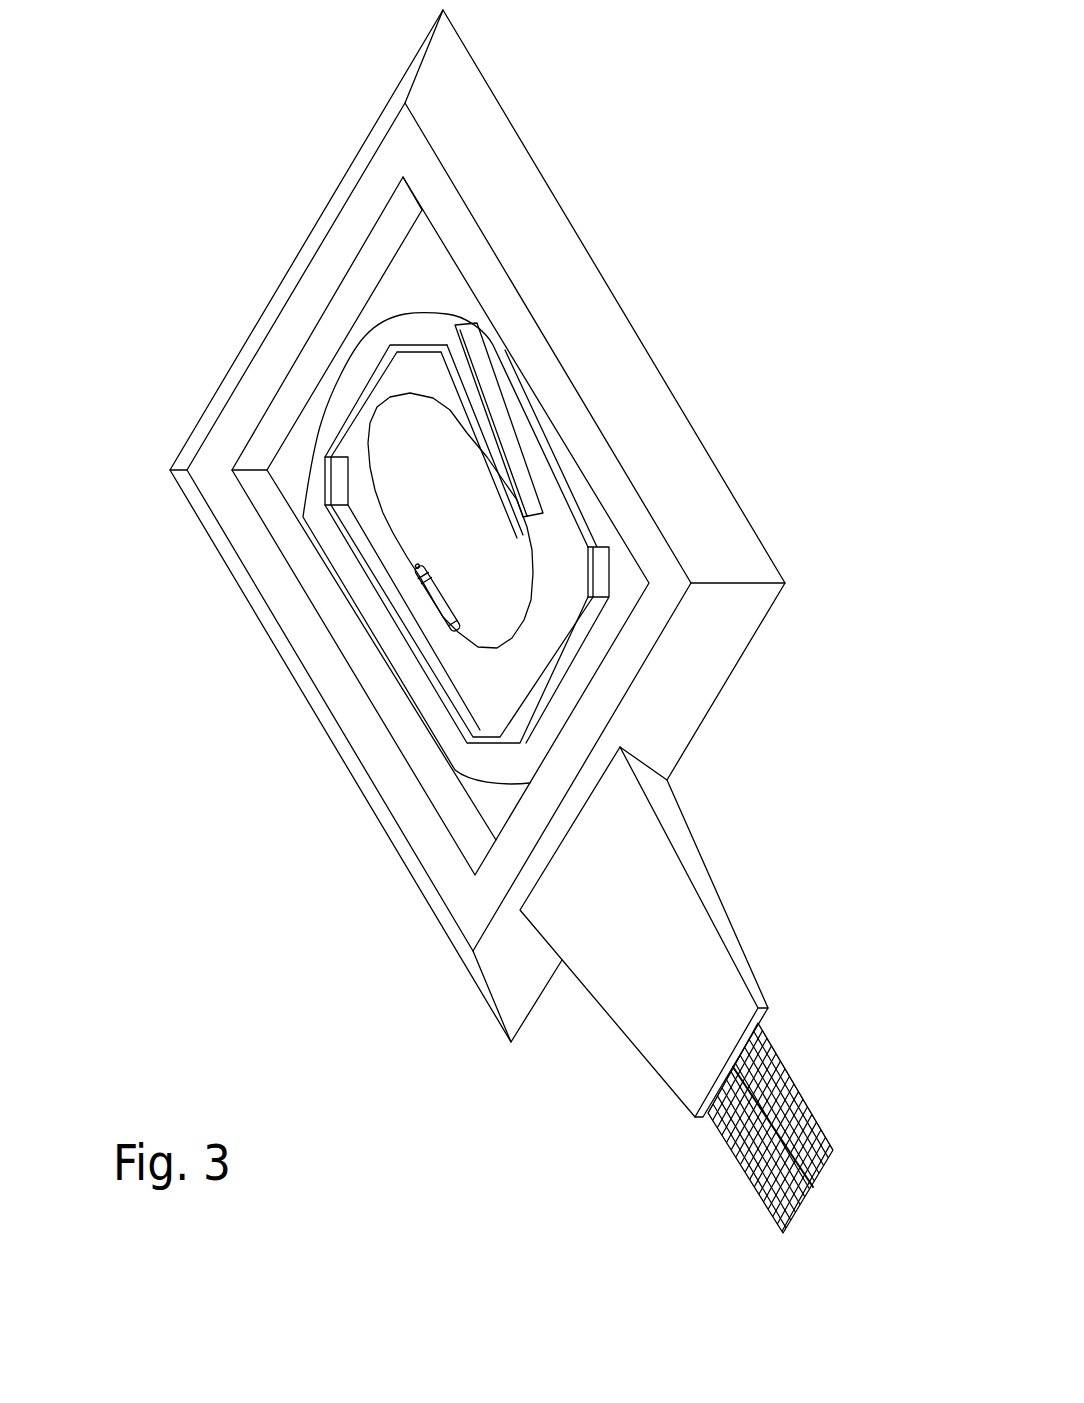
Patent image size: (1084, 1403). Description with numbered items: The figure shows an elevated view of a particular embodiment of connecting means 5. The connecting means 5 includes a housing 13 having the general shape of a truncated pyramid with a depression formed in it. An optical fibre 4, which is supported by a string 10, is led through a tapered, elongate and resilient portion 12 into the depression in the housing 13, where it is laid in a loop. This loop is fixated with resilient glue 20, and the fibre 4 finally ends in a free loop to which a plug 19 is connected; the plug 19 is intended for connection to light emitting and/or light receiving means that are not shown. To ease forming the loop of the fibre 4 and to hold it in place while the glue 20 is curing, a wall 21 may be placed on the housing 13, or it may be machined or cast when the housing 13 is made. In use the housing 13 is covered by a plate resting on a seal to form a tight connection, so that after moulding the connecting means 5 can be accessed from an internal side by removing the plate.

The connecting means 5 is at (246, 148).
The housing 13 is at (558, 297).
The wall 21 is at (557, 477).
The resilient glue 20 is at (315, 527).
The plug 19 is at (430, 612).
The optical fibre 4 is at (427, 717).
The tapered, elongate and resilient portion 12 is at (668, 912).
The string 10 is at (805, 1098).